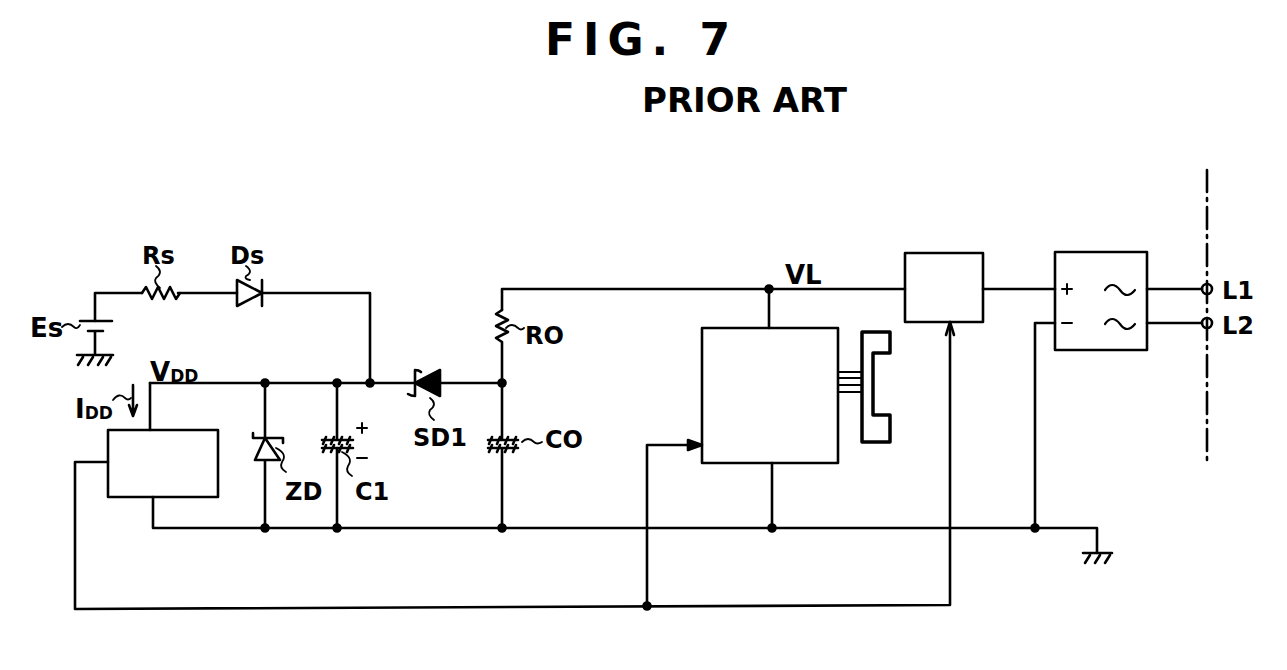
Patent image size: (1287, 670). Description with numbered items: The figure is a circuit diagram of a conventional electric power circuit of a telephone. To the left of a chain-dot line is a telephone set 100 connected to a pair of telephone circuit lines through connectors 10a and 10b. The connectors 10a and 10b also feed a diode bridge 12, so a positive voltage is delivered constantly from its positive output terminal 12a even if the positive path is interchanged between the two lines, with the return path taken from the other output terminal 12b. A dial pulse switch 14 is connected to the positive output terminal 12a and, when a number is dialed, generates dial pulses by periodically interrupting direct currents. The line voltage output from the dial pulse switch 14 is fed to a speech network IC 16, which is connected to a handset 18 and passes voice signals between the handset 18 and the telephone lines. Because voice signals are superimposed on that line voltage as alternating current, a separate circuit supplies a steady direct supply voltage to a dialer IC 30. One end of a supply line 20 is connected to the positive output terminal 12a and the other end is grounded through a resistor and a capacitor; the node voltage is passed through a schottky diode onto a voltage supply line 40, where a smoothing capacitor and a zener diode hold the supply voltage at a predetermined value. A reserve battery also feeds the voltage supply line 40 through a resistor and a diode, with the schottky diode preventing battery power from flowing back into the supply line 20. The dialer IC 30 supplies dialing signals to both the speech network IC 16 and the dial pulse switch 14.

The telephone set 100 is at (772, 268).
The connector 10a is at (1211, 281).
The connector 10b is at (1212, 330).
The diode bridge 12 is at (1095, 252).
The positive output terminal 12a is at (1020, 287).
The negative output of polarity guard 12b is at (1040, 326).
The dial pulse switch 14 is at (937, 253).
The speech network IC 16 is at (702, 408).
The handset 18 is at (876, 388).
The supply line 20 is at (580, 288).
The dialer IC 30 is at (120, 498).
The voltage supply line 40 is at (240, 383).